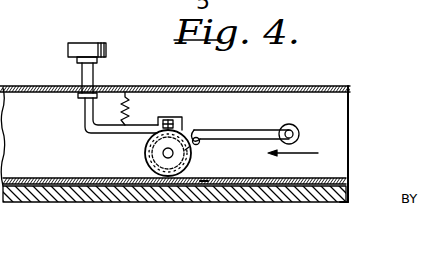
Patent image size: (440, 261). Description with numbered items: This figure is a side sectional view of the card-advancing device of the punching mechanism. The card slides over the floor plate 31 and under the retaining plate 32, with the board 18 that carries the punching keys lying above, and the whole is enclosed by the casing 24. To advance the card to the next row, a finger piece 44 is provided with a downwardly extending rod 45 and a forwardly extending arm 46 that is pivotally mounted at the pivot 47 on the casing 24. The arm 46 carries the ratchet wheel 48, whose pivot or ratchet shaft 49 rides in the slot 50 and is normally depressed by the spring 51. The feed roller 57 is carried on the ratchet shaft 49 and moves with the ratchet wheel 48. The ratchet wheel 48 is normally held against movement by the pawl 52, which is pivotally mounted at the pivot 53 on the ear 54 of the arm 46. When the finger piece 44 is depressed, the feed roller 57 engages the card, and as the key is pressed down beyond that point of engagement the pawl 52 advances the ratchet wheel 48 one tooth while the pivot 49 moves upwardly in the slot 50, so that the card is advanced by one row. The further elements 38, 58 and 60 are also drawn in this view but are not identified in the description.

The board 18 is at (335, 85).
The casing 24 is at (326, 141).
The floor plate 31 is at (128, 199).
The retaining plate 32 is at (73, 183).
The support 38 is at (351, 185).
The finger piece 44 is at (77, 43).
The downwardly extending rod 45 is at (84, 114).
The forwardly extending arm 46 is at (277, 159).
The pivot 47 is at (299, 125).
The ratchet wheel 48 is at (182, 182).
The ratchet shaft 49 is at (171, 150).
The slot 50 is at (201, 98).
The spring 51 is at (169, 121).
The pawl 52 is at (188, 151).
The pivot 53 is at (230, 130).
The ear 54 is at (232, 140).
The feed roller 57 is at (157, 178).
The slot 58 is at (204, 185).
The spring 60 is at (127, 97).